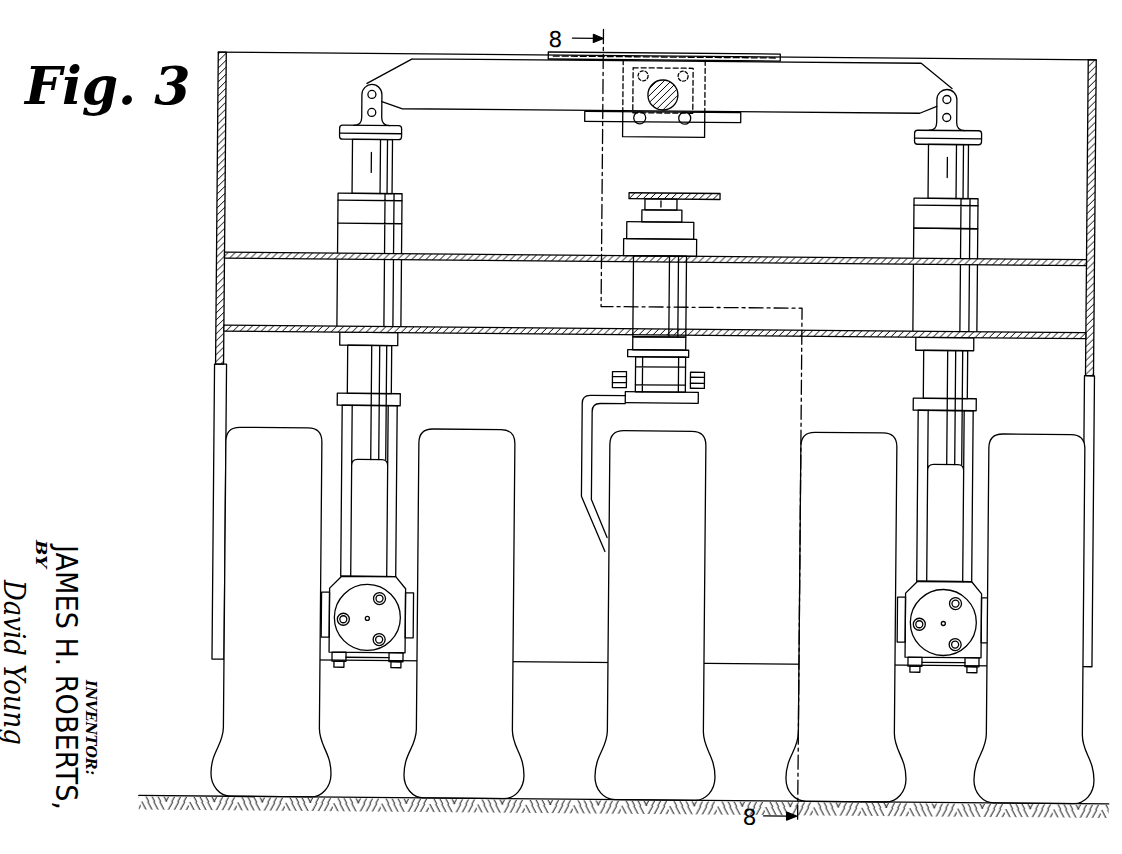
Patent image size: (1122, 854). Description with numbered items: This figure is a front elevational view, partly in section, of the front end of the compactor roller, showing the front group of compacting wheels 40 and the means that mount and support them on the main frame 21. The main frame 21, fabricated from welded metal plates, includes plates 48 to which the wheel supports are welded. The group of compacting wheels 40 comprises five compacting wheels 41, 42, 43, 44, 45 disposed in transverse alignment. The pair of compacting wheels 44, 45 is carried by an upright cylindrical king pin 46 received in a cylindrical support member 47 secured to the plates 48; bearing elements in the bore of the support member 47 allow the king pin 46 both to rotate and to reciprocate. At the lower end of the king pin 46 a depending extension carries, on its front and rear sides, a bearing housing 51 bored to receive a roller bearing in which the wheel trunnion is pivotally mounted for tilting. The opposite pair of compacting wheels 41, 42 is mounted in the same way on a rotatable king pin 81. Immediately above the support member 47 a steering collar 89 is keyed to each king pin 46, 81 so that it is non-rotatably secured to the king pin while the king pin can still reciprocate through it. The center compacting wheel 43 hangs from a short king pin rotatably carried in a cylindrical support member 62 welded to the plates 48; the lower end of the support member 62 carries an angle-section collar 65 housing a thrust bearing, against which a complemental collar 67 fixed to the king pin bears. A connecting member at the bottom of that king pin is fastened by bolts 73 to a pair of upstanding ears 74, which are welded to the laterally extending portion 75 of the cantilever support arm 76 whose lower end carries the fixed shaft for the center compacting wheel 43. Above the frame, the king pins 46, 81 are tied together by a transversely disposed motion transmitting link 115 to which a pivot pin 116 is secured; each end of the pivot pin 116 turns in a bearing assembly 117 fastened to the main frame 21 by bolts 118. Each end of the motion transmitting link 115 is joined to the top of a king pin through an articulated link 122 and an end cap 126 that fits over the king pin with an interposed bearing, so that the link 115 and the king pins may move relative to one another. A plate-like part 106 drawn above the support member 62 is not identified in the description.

The main frame 21 is at (202, 173).
The group of compacting wheels 40 is at (205, 512).
The compacting wheel 41 is at (268, 449).
The compacting wheel 42 is at (468, 444).
The center compacting wheel 43 is at (688, 446).
The compacting wheel 44 is at (847, 444).
The compacting wheel 45 is at (1030, 435).
The king pin 46 is at (954, 375).
The cylindrical support member 47 is at (968, 246).
The plates 48 is at (1016, 326).
The bearing housing 51 is at (391, 585).
The cylindrical support member 62 is at (675, 293).
The collar 65 is at (682, 346).
The collar 67 is at (627, 359).
The bolts 73 is at (700, 376).
The upstanding ears 74 is at (618, 393).
The laterally extending portion 75 is at (657, 403).
The cantilever support arm 76 is at (588, 410).
The king pin 81 is at (378, 369).
The steering collar 89 is at (970, 217).
The plate 106 is at (718, 196).
The motion transmitting link 115 is at (819, 73).
The pivot pin 116 is at (672, 92).
The bearing assembly 117 is at (666, 125).
The bolts 118 is at (635, 123).
The link 122 is at (346, 102).
The end cap 126 is at (337, 134).